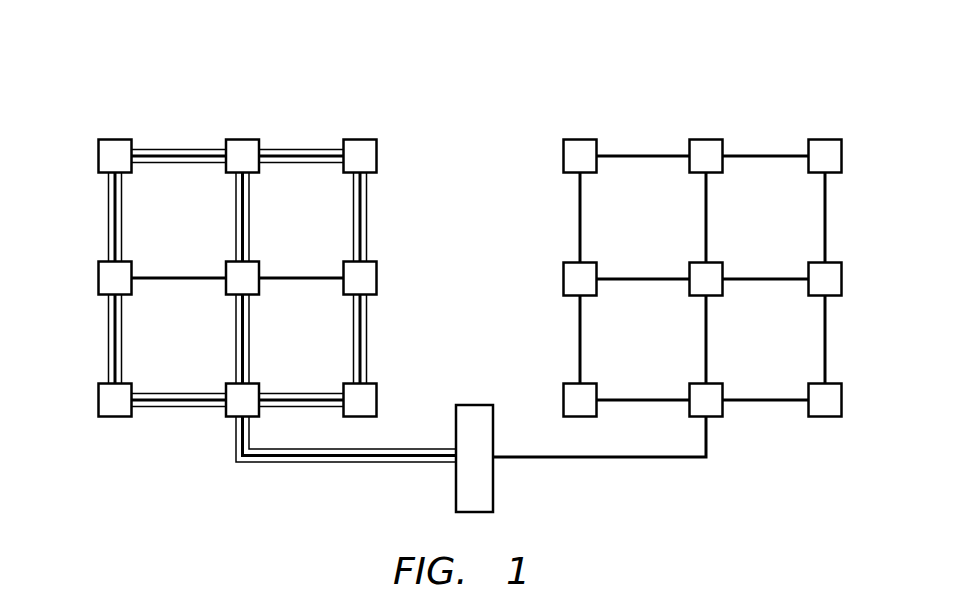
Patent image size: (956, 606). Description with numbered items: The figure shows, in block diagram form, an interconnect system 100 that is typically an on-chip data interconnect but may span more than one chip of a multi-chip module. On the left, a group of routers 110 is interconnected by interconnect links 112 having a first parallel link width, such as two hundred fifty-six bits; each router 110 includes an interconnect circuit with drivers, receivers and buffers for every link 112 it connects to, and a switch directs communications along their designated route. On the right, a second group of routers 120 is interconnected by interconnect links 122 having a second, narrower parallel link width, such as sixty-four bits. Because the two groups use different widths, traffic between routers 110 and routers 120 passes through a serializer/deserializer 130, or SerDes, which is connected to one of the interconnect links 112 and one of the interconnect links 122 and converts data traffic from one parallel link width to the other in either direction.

The interconnect system 100 is at (154, 43).
The router 110 is at (110, 139).
The interconnect link 112 is at (110, 223).
The router 120 is at (563, 152).
The interconnect link 122 is at (578, 230).
The serializer/deserializer 130 is at (475, 404).